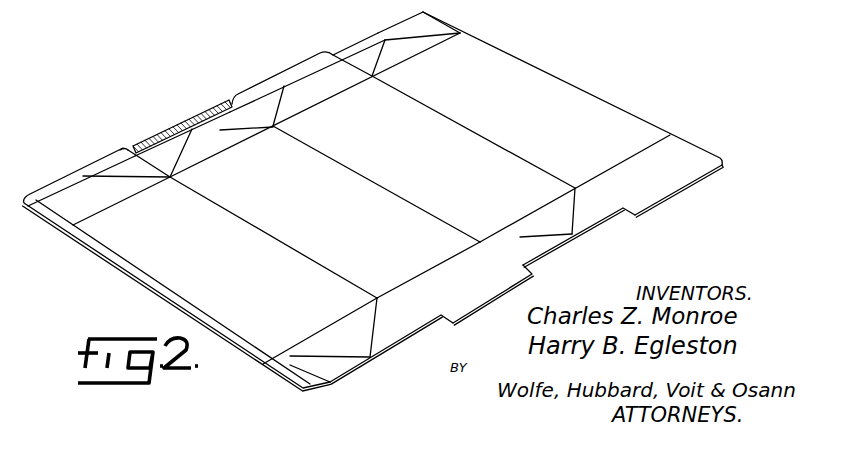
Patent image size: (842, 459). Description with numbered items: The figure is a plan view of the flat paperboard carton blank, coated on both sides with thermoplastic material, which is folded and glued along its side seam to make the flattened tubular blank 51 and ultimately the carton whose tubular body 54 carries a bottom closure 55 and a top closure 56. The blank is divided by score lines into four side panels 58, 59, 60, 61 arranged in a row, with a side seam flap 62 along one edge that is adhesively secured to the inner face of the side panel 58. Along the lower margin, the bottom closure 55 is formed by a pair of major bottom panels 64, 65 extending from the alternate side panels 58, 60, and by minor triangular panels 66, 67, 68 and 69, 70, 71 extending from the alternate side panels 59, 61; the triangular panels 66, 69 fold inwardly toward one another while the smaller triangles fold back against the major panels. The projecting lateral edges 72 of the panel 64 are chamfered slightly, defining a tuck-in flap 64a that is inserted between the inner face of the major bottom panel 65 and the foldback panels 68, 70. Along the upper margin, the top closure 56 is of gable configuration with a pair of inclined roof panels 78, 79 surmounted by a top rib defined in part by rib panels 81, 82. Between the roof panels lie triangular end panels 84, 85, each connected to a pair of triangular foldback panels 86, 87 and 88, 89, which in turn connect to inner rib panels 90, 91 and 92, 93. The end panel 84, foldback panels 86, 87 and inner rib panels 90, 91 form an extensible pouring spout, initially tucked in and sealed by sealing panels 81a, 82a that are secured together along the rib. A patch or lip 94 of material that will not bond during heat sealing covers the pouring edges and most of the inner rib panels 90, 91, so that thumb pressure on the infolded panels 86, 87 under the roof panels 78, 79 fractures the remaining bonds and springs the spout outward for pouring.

The tubular blank 51 is at (557, 60).
The tubular body 54 is at (120, 276).
The bottom closure 55 is at (422, 342).
The top closure 56 is at (208, 73).
The side panel 58 is at (532, 116).
The side panel 59 is at (434, 170).
The side panel 60 is at (340, 222).
The side panel 61 is at (246, 279).
The side seam flap 62 is at (165, 298).
The major bottom panel 64 is at (680, 158).
The tuck-in flap 64a is at (695, 187).
The major bottom panel 65 is at (463, 292).
The minor triangular panel 66 is at (555, 220).
The minor triangular panel 67 is at (588, 214).
The minor triangular panel 68 is at (532, 250).
The minor triangular panel 69 is at (365, 345).
The minor triangular panel 70 is at (383, 335).
The minor triangular panel 71 is at (323, 370).
The projecting lateral edge 72 is at (723, 160).
The inclined roof panel 78 is at (110, 193).
The inclined roof panel 79 is at (322, 92).
The rib panel 81 is at (70, 175).
The sealing panel 81a is at (107, 157).
The rib panel 82 is at (300, 78).
The sealing panel 82a is at (257, 67).
The triangular end panel 84 is at (212, 145).
The triangular end panel 85 is at (415, 50).
The triangular foldback panel 86 is at (242, 125).
The triangular foldback panel 87 is at (172, 157).
The triangular foldback panel 88 is at (440, 24).
The triangular foldback panel 89 is at (372, 62).
The inner rib panel 90 is at (230, 102).
The inner rib panel 91 is at (138, 150).
The inner rib panel 92 is at (410, 17).
The inner rib panel 93 is at (368, 38).
The patch or lip 94 is at (177, 126).